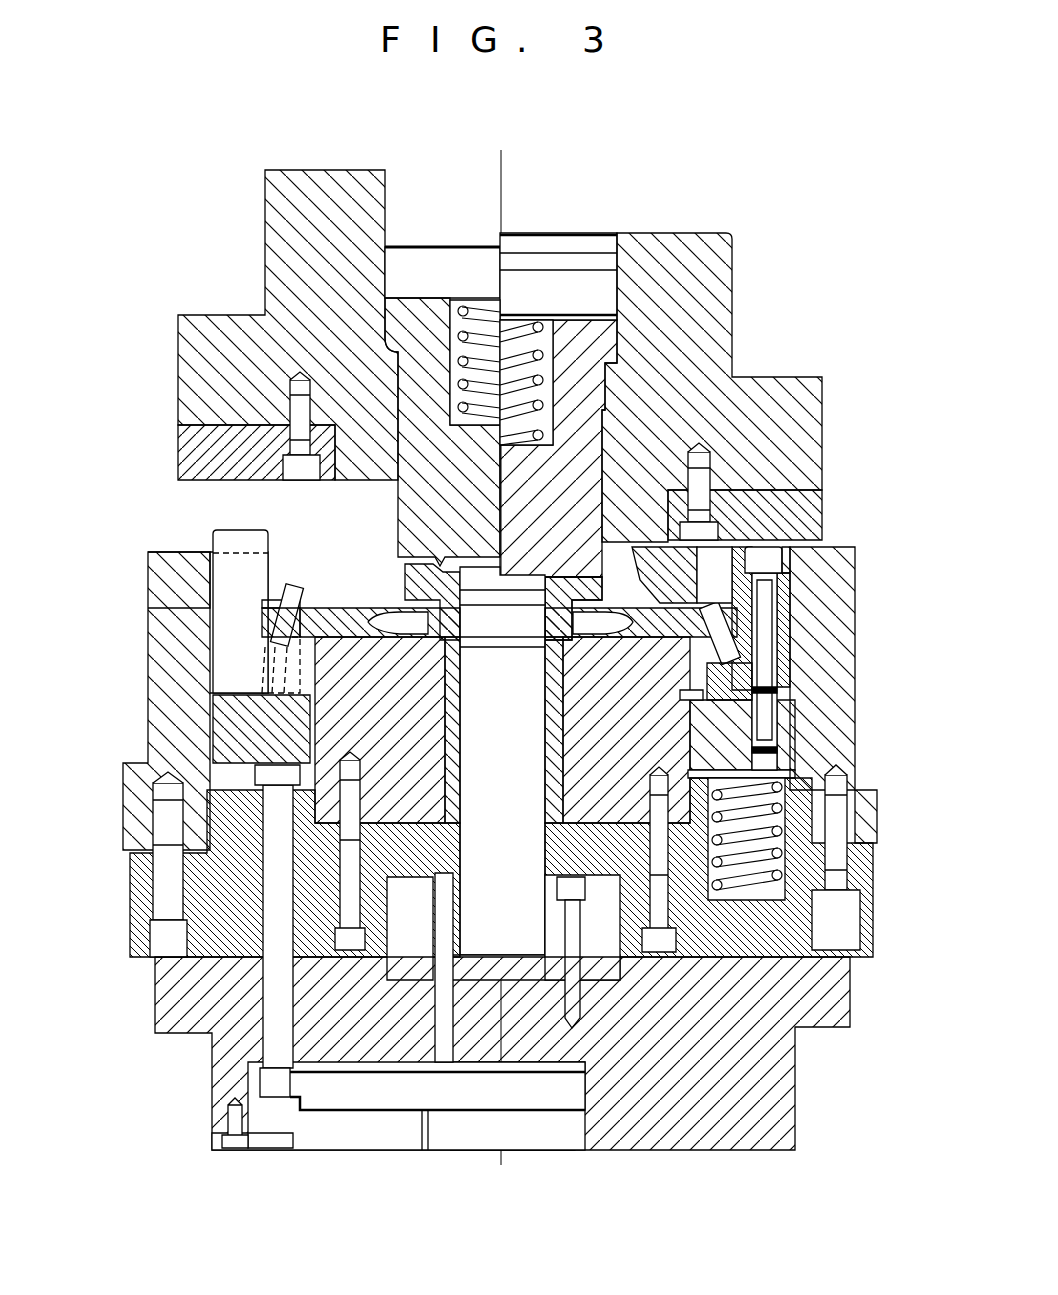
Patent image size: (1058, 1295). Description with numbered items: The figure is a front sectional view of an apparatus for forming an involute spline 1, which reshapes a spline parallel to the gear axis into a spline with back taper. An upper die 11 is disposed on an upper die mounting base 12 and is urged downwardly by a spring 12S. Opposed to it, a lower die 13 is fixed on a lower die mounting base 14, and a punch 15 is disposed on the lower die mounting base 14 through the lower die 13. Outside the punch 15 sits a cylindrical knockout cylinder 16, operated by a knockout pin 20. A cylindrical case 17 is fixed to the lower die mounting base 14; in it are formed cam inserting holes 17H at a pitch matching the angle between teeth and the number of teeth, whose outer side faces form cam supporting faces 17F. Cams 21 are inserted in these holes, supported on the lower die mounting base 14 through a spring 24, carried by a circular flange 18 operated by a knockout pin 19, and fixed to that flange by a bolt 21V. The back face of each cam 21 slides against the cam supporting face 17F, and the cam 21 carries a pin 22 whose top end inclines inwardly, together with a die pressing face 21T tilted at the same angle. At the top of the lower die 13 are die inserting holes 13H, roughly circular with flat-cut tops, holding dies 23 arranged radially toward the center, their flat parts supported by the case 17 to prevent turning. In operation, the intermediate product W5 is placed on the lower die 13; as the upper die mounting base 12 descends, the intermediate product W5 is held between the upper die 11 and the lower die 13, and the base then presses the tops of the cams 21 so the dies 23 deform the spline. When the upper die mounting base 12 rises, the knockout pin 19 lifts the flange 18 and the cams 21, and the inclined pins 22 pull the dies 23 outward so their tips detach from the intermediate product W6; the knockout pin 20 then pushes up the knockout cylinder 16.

The apparatus for forming an involute spline 1 is at (760, 285).
The upper die 11 is at (430, 300).
The upper die mounting base 12 is at (628, 478).
The spring 12S is at (543, 320).
The lower die 13 is at (362, 765).
The die inserting holes 13H is at (356, 640).
The lower die mounting base 14 is at (205, 883).
The punch 15 is at (535, 858).
The knockout cylinder 16 is at (556, 723).
The cylindrical case 17 is at (178, 662).
The cam inserting holes 17H is at (198, 542).
The cam supporting faces 17F is at (198, 590).
The circular flange 18 is at (235, 725).
The knockout pin 19 is at (273, 1028).
The knockout pin 20 is at (411, 1064).
The cam 21 is at (245, 545).
The die pressing face 21T is at (262, 604).
The bolt 21V is at (767, 668).
The pin 22 is at (290, 596).
The die 23 is at (352, 606).
The spring 24 is at (800, 778).
The intermediate product W5 is at (578, 575).
The intermediate product W6 is at (562, 586).